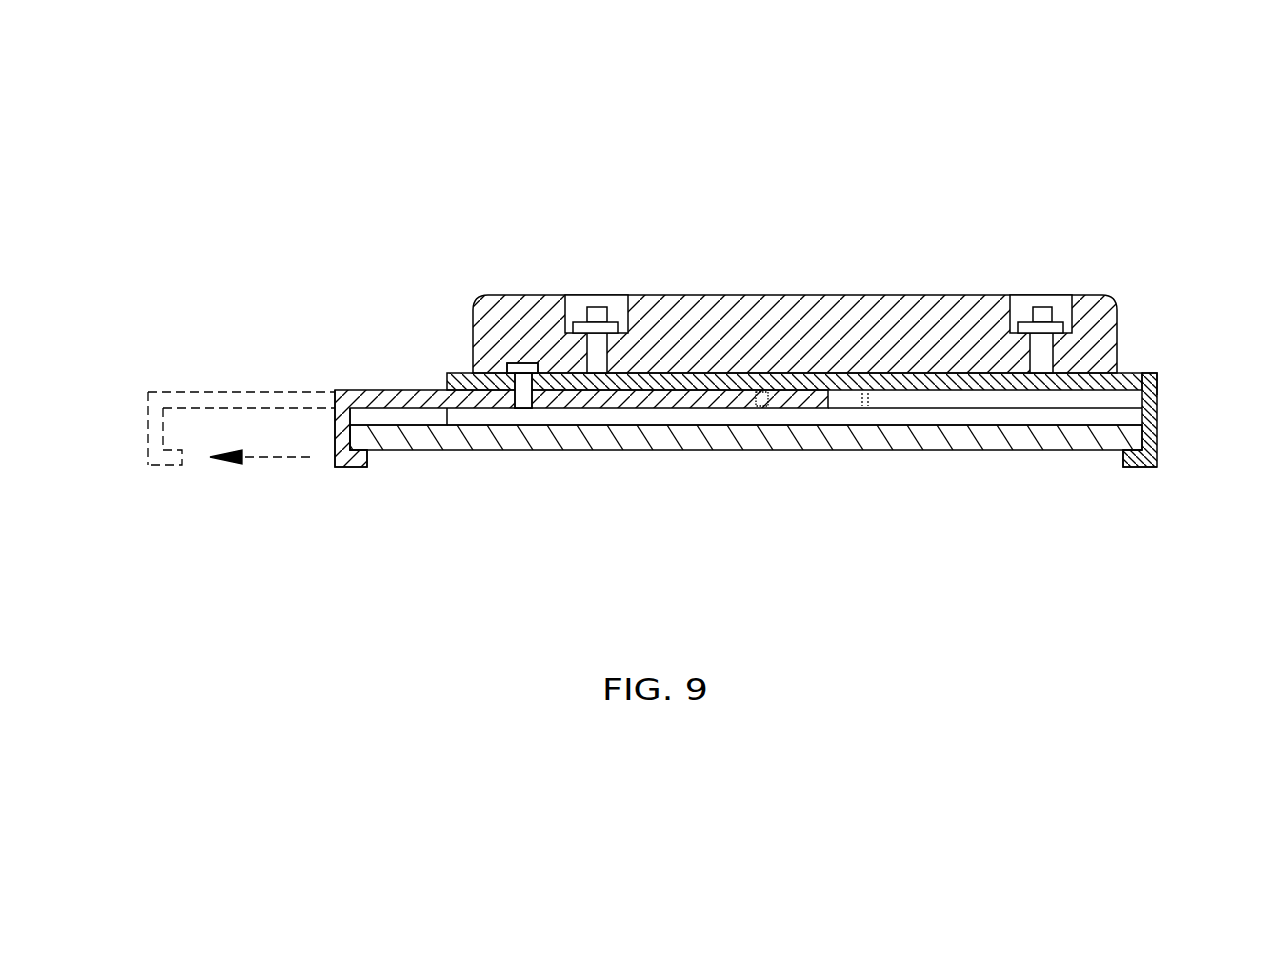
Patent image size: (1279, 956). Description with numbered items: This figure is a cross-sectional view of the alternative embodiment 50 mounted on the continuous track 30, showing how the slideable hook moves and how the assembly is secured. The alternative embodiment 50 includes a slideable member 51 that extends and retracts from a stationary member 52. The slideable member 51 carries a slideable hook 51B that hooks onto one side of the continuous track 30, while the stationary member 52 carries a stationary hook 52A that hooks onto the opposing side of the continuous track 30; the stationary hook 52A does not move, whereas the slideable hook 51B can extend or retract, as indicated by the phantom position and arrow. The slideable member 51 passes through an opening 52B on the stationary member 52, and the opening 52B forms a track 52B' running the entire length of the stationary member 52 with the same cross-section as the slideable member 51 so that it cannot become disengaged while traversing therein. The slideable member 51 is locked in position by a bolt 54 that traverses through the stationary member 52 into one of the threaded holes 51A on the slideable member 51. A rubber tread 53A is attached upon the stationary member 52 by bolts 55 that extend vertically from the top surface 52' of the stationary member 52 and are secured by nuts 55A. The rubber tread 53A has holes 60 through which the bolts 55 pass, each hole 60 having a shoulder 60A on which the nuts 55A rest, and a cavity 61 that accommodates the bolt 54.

The alternative embodiment 50 is at (438, 160).
The hole 60 is at (628, 295).
The shoulder 60A is at (615, 310).
The bolt 55 is at (586, 337).
The nut 55A is at (580, 322).
The rubber tread 53A is at (1118, 326).
The stationary member 52 is at (1194, 383).
The top surface 52' is at (1196, 309).
The stationary hook 52A is at (1142, 422).
The opening 52B is at (398, 493).
The track 52B' is at (794, 505).
The slideable member 51 is at (387, 390).
The threaded hole 51A is at (512, 404).
The slideable hook 51B is at (336, 432).
The bolt 54 is at (531, 405).
The cavity 61 is at (519, 363).
The continuous track 30 is at (998, 450).